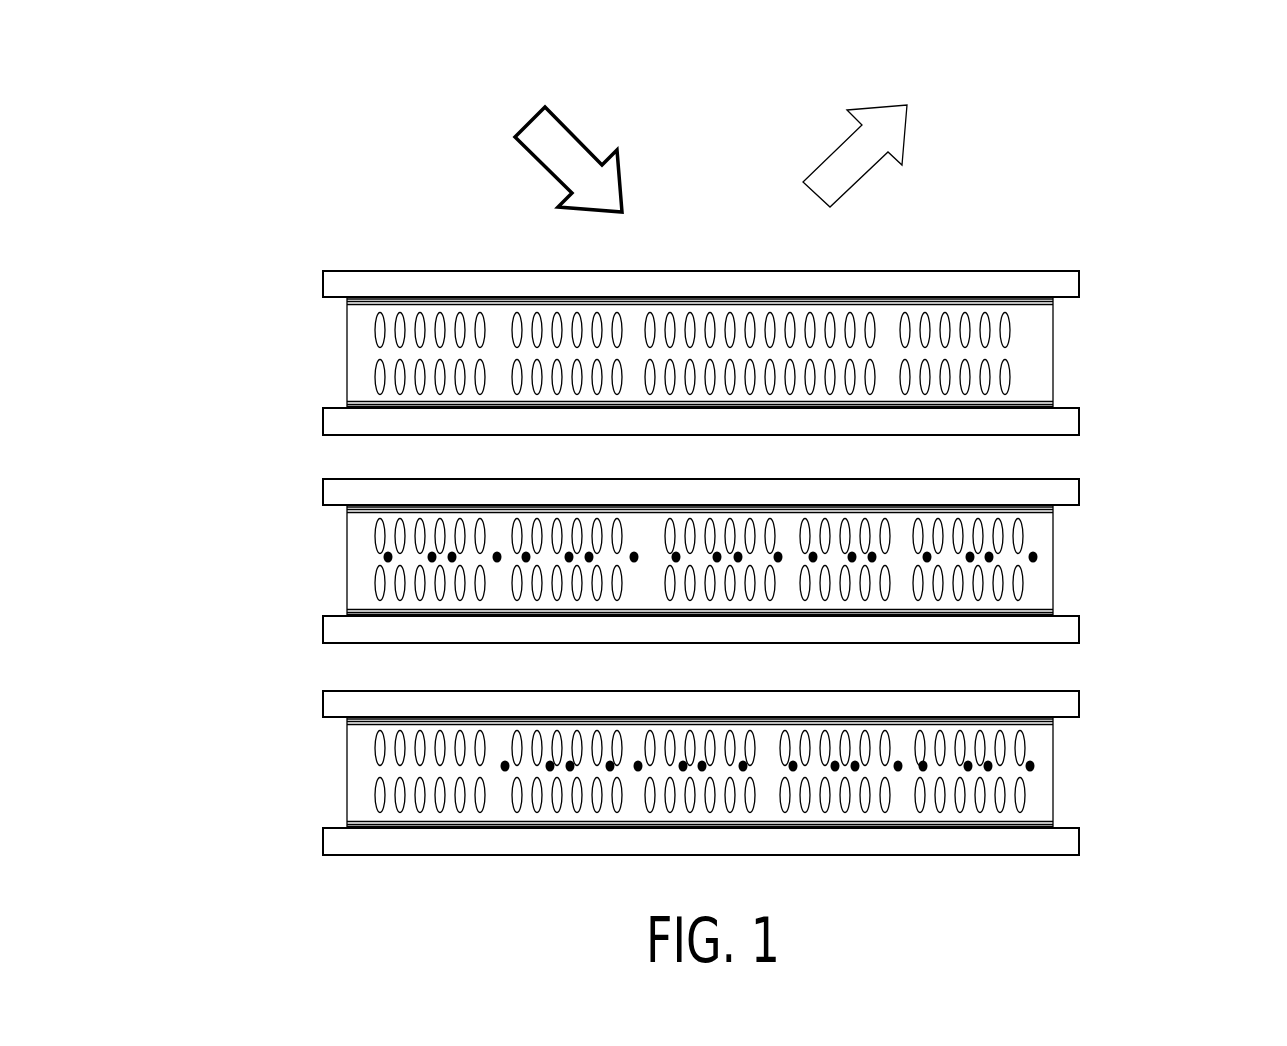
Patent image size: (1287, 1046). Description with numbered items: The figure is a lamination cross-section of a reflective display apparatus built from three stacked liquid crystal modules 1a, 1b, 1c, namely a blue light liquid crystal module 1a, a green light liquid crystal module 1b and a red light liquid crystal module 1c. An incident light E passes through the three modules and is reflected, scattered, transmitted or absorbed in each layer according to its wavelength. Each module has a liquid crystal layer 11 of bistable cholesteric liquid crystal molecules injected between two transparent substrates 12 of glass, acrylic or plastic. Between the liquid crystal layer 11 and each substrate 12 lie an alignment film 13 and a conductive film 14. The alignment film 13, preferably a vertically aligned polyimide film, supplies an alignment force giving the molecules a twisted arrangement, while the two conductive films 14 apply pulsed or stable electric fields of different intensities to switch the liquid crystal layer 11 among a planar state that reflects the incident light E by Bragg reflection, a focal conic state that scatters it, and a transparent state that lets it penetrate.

The blue light liquid crystal module 1a is at (275, 349).
The green light liquid crystal module 1b is at (275, 557).
The red light liquid crystal module 1c is at (275, 769).
The liquid crystal layer 11 is at (1040, 352).
The substrate 12 is at (1070, 285).
The alignment film 13 is at (1050, 304).
The conductive film 14 is at (1047, 302).
The incident light E is at (580, 138).